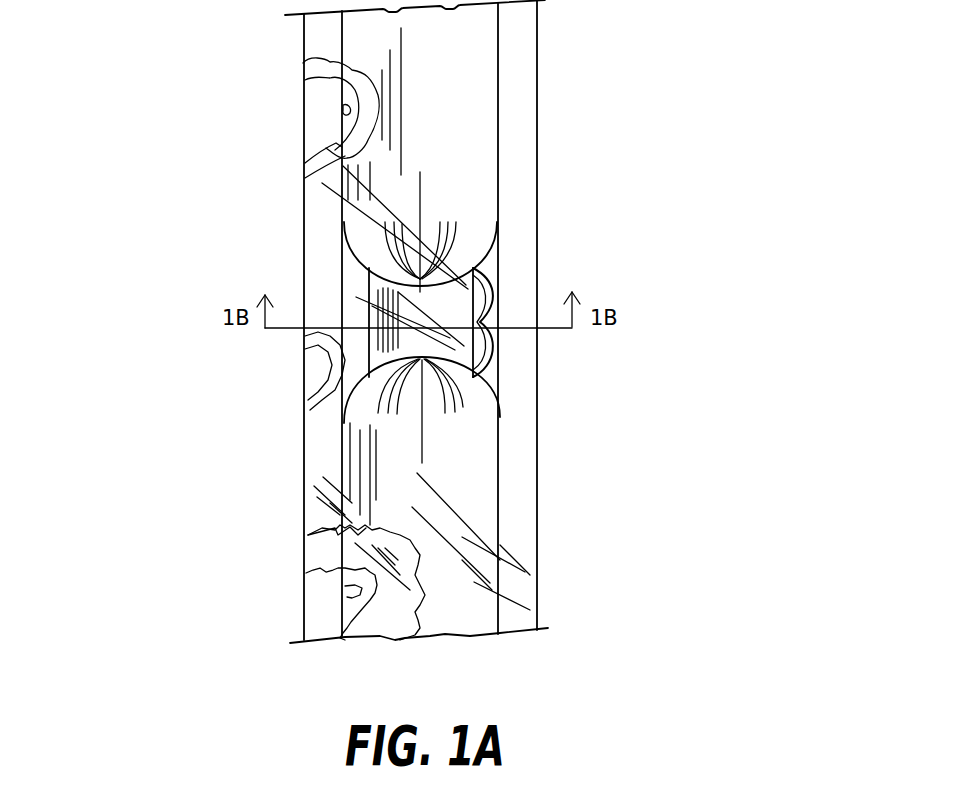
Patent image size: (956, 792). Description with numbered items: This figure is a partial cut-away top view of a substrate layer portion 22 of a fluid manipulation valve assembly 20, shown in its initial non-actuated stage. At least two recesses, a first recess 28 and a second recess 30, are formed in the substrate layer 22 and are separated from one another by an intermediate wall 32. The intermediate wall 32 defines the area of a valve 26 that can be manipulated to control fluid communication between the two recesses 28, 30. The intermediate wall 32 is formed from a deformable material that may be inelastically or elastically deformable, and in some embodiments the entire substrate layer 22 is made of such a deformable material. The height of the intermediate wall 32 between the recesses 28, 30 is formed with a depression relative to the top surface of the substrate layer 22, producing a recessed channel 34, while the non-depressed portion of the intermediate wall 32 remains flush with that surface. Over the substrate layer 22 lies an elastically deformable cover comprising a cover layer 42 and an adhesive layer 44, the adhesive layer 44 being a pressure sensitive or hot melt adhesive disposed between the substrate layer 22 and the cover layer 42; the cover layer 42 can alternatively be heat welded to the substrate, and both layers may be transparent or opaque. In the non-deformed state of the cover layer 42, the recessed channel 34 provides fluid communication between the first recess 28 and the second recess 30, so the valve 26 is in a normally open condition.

The fluid manipulation valve assembly 20 is at (192, 345).
The substrate layer 22 is at (317, 363).
The valve 26 is at (507, 273).
The first recess 28 is at (343, 110).
The second recess 30 is at (347, 588).
The intermediate wall 32 is at (478, 320).
The recessed channel 34 is at (385, 300).
The cover layer 42 is at (470, 623).
The adhesive layer 44 is at (308, 70).